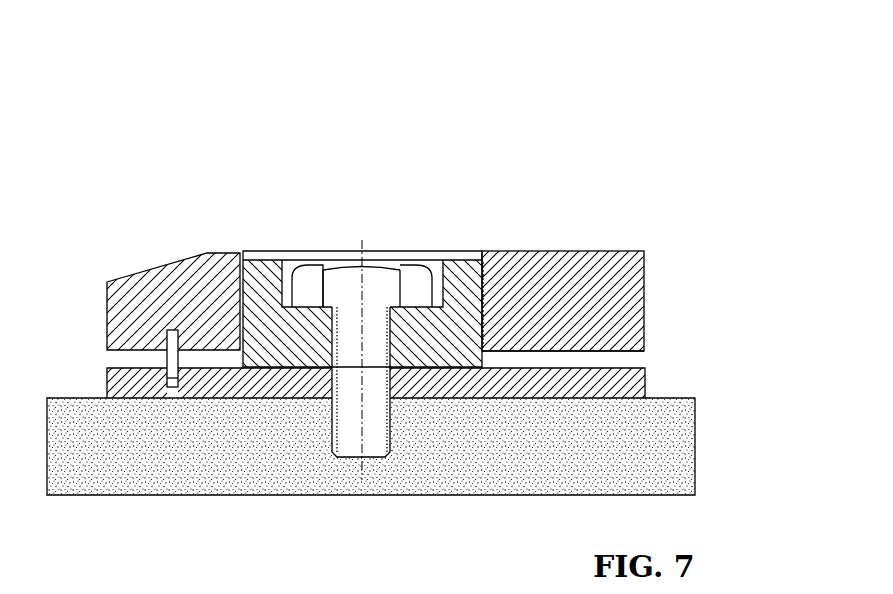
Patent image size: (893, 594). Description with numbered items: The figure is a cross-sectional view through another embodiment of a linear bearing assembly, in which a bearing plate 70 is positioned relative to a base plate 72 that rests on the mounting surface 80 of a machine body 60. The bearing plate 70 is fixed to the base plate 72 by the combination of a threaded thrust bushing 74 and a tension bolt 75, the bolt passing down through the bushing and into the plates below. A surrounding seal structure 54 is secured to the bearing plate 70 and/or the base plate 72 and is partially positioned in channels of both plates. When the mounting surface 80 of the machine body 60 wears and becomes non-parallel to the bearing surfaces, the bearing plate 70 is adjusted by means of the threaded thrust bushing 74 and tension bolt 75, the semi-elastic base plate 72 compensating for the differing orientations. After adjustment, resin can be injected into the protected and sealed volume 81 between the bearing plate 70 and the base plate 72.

The surrounding seal structure 54 is at (165, 337).
The machine body 60 is at (643, 457).
The bearing plate 70 is at (560, 287).
The base plate 72 is at (608, 380).
The threaded thrust bushing 74 is at (262, 300).
The tension bolt 75 is at (373, 280).
The mounting surface 80 is at (546, 396).
The protected and sealed volume 81 is at (593, 362).